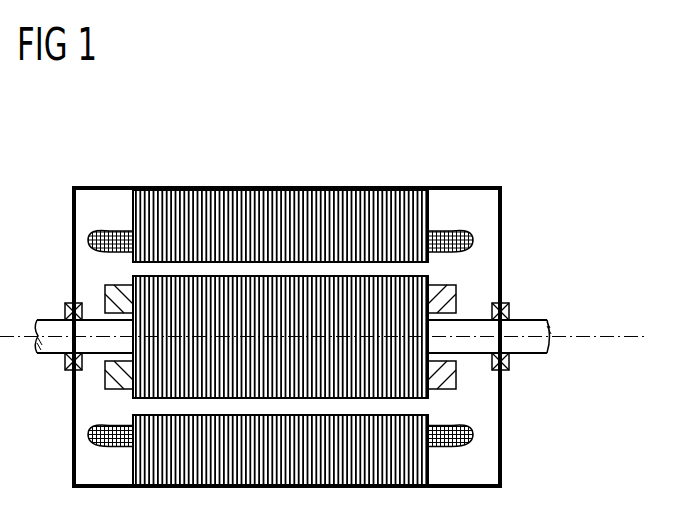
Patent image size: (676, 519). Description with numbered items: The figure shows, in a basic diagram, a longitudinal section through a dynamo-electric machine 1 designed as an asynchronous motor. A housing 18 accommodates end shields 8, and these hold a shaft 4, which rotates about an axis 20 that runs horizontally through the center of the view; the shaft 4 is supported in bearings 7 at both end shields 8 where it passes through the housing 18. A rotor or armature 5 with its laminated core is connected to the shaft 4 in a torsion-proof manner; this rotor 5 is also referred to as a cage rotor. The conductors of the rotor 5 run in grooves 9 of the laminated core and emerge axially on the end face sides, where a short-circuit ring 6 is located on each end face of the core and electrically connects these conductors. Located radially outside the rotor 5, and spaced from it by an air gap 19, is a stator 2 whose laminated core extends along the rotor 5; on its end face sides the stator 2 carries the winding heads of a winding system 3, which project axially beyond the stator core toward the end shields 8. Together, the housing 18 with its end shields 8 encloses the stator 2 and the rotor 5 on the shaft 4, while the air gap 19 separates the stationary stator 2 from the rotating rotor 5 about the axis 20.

The electric machine 1 is at (369, 111).
The stator 2 is at (264, 205).
The winding system 3 is at (450, 230).
The shaft 4 is at (55, 345).
The rotor 5 is at (408, 301).
The short-circuit ring 6 is at (445, 376).
The bearings 7 is at (508, 362).
The end shields 8 is at (503, 228).
The grooves 9 is at (147, 270).
The housing 18 is at (107, 187).
The air gap 19 is at (415, 407).
The axis 20 is at (628, 330).